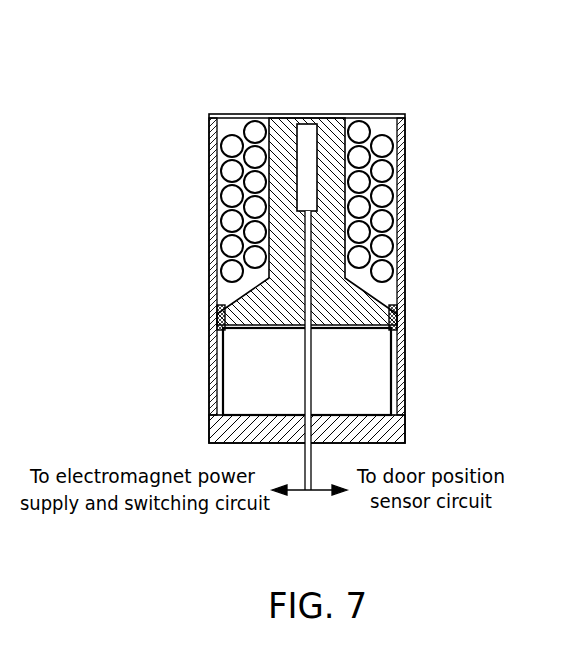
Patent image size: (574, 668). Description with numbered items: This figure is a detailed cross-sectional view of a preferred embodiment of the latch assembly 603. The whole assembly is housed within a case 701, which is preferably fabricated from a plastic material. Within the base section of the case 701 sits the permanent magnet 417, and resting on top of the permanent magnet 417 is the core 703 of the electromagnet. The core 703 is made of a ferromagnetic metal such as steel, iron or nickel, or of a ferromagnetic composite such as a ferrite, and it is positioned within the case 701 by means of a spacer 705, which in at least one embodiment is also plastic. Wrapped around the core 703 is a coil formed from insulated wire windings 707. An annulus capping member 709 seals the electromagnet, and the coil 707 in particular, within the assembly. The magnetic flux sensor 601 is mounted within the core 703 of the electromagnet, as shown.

The latch assembly 603 is at (263, 249).
The magnetic flux sensor 601 is at (307, 150).
The annulus capping member 709 is at (382, 115).
The case 701 is at (210, 242).
The insulated wire windings 707 is at (382, 222).
The core 703 is at (330, 258).
The spacer 705 is at (220, 307).
The permanent magnet 417 is at (284, 386).